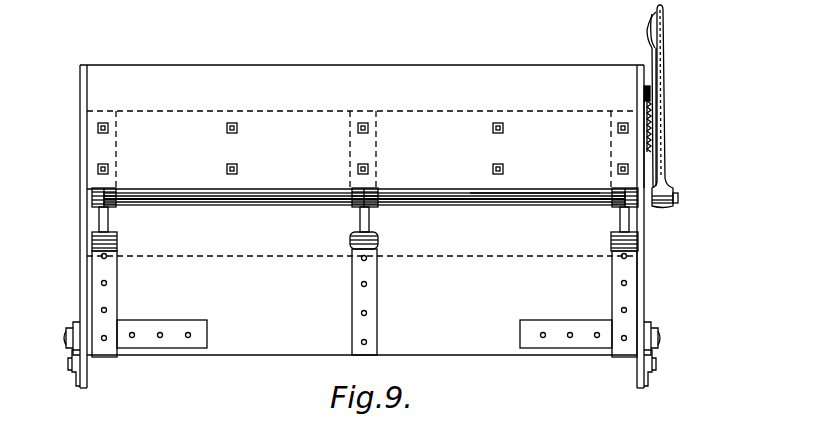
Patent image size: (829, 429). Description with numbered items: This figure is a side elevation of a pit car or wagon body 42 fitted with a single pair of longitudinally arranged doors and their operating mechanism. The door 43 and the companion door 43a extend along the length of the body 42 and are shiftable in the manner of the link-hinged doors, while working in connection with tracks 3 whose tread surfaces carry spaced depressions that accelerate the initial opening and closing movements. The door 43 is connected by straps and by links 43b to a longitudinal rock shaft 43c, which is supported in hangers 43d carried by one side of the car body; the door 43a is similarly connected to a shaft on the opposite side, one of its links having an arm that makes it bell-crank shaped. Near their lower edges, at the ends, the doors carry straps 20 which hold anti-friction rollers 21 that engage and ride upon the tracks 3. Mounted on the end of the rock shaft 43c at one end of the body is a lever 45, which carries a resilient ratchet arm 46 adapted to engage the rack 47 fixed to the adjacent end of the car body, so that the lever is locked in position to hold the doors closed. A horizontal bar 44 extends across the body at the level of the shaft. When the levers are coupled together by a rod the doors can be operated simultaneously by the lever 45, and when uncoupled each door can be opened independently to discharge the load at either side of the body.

The pit car or wagon body 42 is at (115, 78).
The door 43 is at (362, 305).
The door 43a is at (112, 272).
The links 43b is at (113, 218).
The longitudinal rock shaft 43c is at (522, 202).
The hangers 43d is at (108, 186).
The horizontal bar 44 is at (446, 199).
The lever 45 is at (662, 57).
The resilient ratchet arm 46 is at (648, 32).
The rack 47 is at (645, 100).
The straps 20 is at (185, 320).
The anti-friction rollers 21 is at (72, 325).
The tracks 3 is at (70, 363).